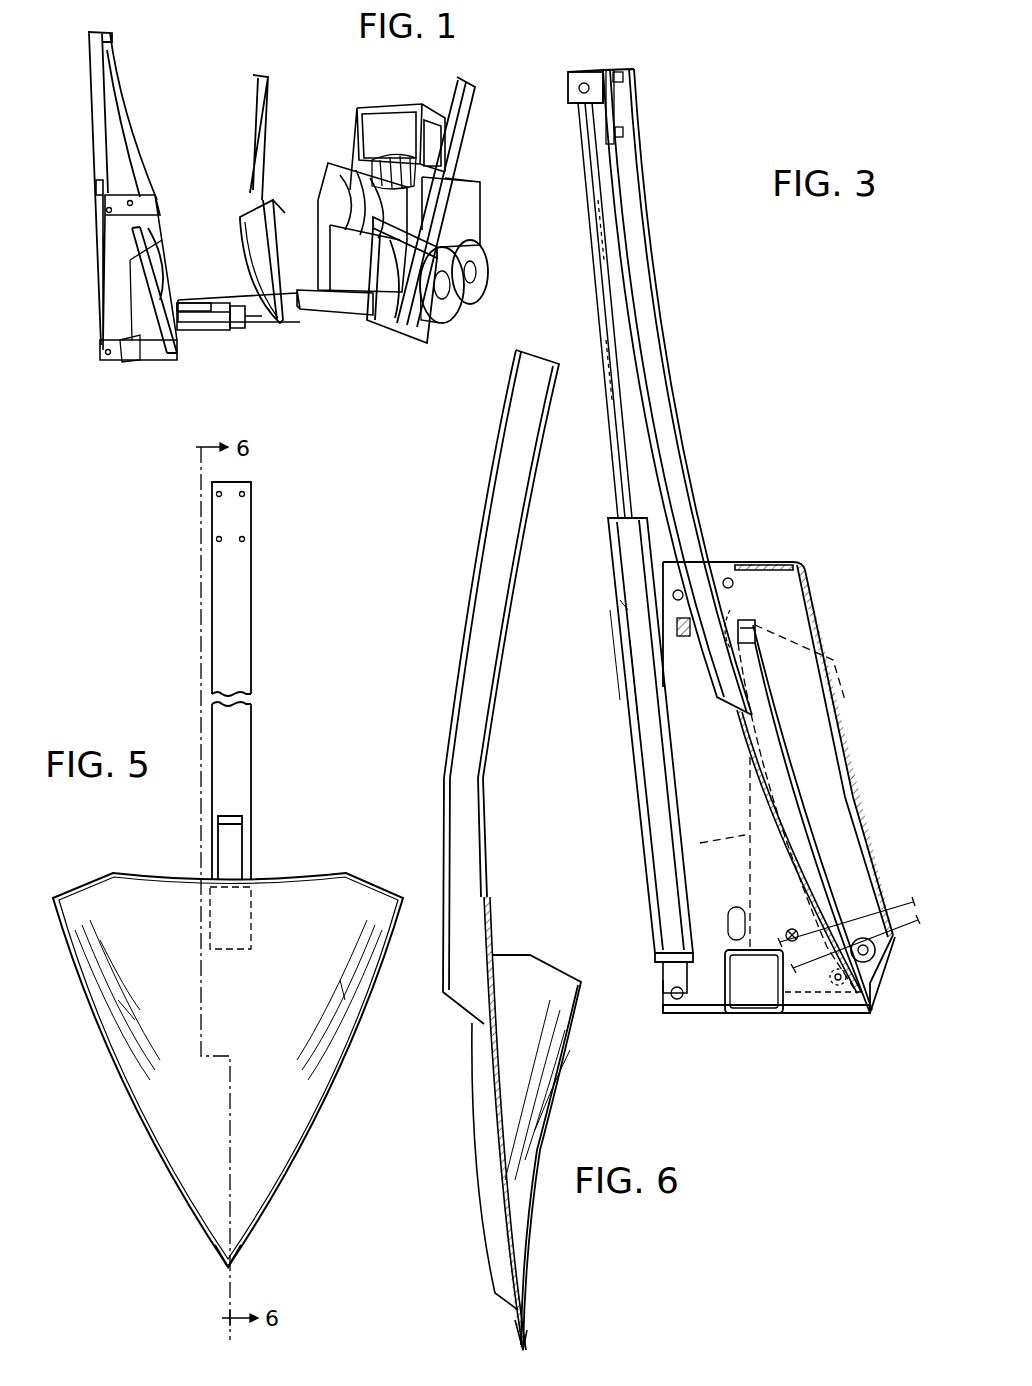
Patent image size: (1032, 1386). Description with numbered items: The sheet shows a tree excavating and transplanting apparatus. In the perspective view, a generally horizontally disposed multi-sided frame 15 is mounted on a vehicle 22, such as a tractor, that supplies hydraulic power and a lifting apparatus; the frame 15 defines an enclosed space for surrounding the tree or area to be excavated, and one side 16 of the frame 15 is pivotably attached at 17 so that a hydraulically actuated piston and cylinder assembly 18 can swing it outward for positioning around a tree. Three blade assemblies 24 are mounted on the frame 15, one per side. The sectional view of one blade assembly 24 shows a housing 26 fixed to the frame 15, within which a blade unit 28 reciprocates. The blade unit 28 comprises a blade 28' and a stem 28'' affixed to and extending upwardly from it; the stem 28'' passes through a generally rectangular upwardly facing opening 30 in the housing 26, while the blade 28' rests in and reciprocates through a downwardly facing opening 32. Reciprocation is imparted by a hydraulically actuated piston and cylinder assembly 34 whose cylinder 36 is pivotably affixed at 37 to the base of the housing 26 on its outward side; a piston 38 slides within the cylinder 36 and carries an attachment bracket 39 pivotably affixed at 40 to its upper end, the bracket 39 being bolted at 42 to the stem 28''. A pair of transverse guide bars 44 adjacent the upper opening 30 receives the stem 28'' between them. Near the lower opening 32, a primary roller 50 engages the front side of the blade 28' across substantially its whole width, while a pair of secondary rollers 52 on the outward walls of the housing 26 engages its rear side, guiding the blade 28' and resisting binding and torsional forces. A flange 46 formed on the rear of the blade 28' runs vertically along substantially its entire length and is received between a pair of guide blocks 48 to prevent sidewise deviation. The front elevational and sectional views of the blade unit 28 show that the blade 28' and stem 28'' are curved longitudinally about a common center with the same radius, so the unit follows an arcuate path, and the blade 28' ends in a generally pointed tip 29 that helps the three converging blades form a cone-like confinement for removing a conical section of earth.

In FIG. 1, the frame 15 is at (340, 312).
In FIG. 1, the side 16 is at (198, 332).
In FIG. 1, the pivot 17 is at (246, 332).
In FIG. 1, the piston and cylinder assembly 18 is at (211, 271).
In FIG. 1, the vehicle 22 is at (344, 152).
In FIG. 1, the blade assembly 24 is at (169, 271).
In FIG. 3, the blade assembly 24 is at (797, 561).
In FIG. 3, the housing 26 is at (812, 600).
In FIG. 3, the blade unit 28 is at (810, 801).
In FIG. 5, the blade unit 28 is at (263, 882).
In FIG. 6, the blade unit 28 is at (451, 1035).
In FIG. 5, the blade 28' is at (228, 1070).
In FIG. 6, the blade 28' is at (551, 1152).
In FIG. 3, the stem 28'' is at (677, 392).
In FIG. 5, the stem 28'' is at (272, 681).
In FIG. 6, the stem 28'' is at (479, 687).
In FIG. 3, the pointed tip 29 is at (870, 1013).
In FIG. 5, the pointed tip 29 is at (228, 1268).
In FIG. 6, the pointed tip 29 is at (524, 1348).
In FIG. 3, the upwardly facing opening 30 is at (715, 562).
In FIG. 3, the downwardly facing opening 32 is at (815, 820).
In FIG. 1, the piston and cylinder assembly 34 is at (92, 258).
In FIG. 3, the piston and cylinder assembly 34 is at (607, 598).
In FIG. 3, the cylinder 36 is at (641, 782).
In FIG. 3, the pivot 37 is at (672, 995).
In FIG. 3, the piston 38 is at (621, 450).
In FIG. 3, the attachment bracket 39 is at (588, 72).
In FIG. 3, the pivot 40 is at (568, 97).
In FIG. 3, the bolts 42 is at (623, 78).
In FIG. 3, the guide bars 44 is at (672, 594).
In FIG. 3, the flange 46 is at (745, 730).
In FIG. 6, the flange 46 is at (484, 1152).
In FIG. 3, the guide blocks 48 is at (790, 932).
In FIG. 3, the primary roller 50 is at (876, 956).
In FIG. 3, the secondary rollers 52 is at (813, 1013).